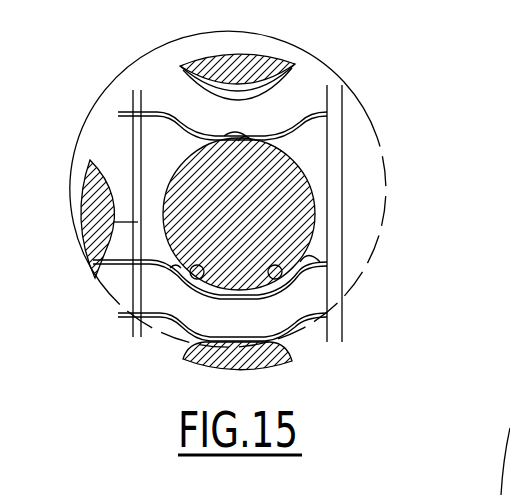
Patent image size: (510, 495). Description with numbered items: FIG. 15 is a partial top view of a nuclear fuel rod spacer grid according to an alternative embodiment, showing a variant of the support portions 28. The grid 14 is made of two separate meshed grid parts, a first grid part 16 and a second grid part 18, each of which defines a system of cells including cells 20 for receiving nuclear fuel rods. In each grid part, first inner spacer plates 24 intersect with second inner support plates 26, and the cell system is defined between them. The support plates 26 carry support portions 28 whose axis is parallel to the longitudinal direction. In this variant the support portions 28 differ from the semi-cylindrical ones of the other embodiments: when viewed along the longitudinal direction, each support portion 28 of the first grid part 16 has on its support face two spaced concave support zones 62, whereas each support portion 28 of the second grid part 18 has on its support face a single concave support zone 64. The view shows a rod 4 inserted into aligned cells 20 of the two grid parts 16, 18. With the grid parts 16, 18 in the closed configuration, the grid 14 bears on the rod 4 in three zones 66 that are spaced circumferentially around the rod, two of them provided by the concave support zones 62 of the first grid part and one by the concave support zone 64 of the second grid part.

The rod 4 is at (283, 207).
The grid 14 is at (416, 246).
The first grid part 16 is at (322, 274).
The second grid part 18 is at (300, 108).
The cells 20 is at (153, 165).
The first inner spacer plates 24 is at (82, 247).
The second inner support plates 26 is at (158, 117).
The support portions 28 is at (318, 112).
The concave support zones 62 is at (194, 285).
The concave support zone 64 is at (247, 137).
The zones 66 is at (228, 135).